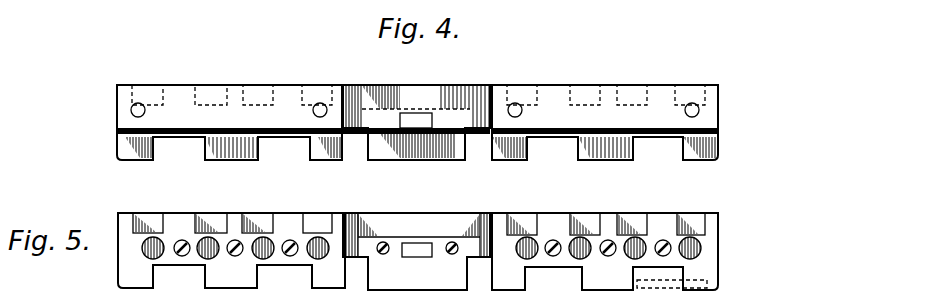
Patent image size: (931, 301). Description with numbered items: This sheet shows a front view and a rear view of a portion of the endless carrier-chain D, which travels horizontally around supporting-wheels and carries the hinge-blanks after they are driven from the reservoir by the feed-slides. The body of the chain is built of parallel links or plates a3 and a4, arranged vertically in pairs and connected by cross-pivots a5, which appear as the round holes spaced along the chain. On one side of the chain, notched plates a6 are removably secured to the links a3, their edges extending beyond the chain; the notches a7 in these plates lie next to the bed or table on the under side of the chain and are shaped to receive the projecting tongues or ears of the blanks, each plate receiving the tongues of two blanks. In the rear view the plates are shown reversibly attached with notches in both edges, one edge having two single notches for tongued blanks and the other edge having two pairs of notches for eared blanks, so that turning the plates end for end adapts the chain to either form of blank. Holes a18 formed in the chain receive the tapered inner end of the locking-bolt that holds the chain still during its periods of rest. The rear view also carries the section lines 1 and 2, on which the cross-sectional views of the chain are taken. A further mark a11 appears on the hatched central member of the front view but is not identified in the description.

In FIG. 4, the links or plates a3 is at (418, 103).
In FIG. 4, the cross-pivots a5 is at (725, 106).
In FIG. 4, the notches a7 is at (424, 151).
In FIG. 5, the notches a7 is at (420, 282).
In FIG. 4, the hatched central portion of plate a11 is at (404, 94).
In FIG. 4, the holes a18 is at (425, 118).
In FIG. 5, the holes a18 is at (416, 250).
In FIG. 4, the endless carrier-chain D is at (416, 73).
In FIG. 5, the endless carrier-chain D is at (235, 198).
In FIG. 5, the links or plates a4 is at (419, 224).
In FIG. 5, the notched plates a6 is at (419, 250).
In FIG. 5, the section line 1 1 is at (200, 300).
In FIG. 5, the section line 2 2 is at (417, 300).